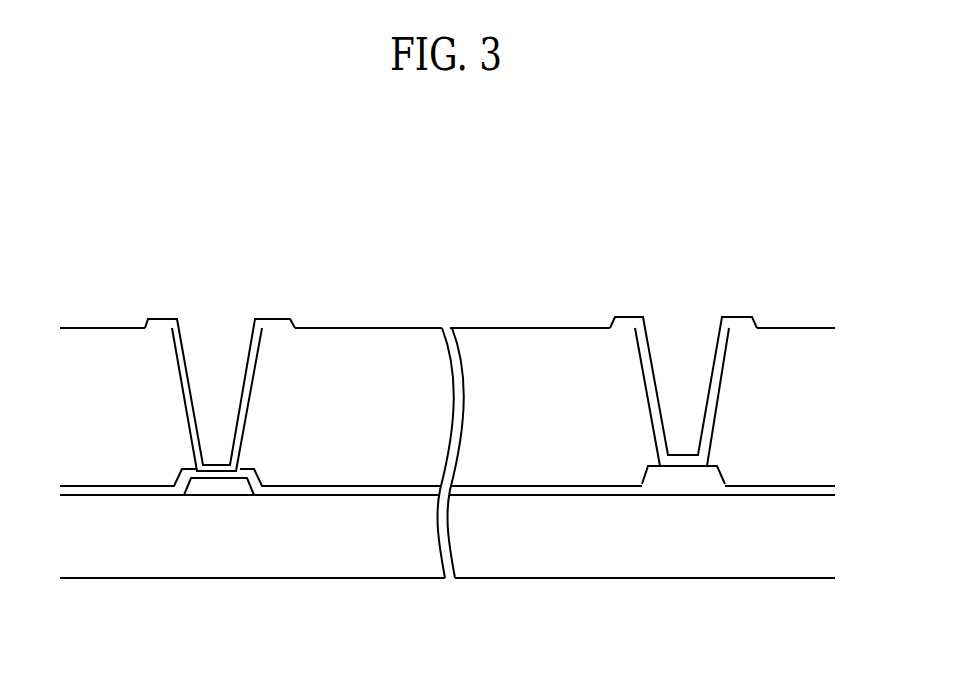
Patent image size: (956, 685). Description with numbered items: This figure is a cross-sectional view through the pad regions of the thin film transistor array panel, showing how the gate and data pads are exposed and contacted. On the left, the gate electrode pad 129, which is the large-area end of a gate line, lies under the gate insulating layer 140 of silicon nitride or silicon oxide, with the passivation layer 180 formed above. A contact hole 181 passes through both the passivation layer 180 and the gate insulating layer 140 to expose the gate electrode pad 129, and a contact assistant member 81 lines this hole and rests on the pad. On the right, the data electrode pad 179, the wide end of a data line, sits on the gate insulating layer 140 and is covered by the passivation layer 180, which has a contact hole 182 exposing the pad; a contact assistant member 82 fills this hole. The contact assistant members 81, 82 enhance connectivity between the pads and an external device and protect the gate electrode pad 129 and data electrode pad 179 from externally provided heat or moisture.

The contact assistant member 81 is at (272, 326).
The contact assistant member 82 is at (740, 323).
The gate electrode pad 129 is at (218, 488).
The gate insulating layer 140 is at (113, 488).
The data electrode pad 179 is at (683, 478).
The passivation layer 180 is at (352, 455).
The contact hole 181 is at (181, 366).
The contact hole 182 is at (646, 367).